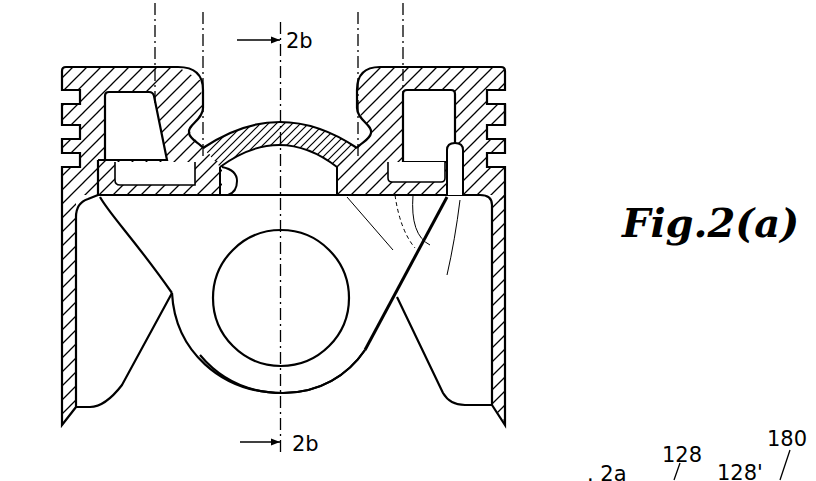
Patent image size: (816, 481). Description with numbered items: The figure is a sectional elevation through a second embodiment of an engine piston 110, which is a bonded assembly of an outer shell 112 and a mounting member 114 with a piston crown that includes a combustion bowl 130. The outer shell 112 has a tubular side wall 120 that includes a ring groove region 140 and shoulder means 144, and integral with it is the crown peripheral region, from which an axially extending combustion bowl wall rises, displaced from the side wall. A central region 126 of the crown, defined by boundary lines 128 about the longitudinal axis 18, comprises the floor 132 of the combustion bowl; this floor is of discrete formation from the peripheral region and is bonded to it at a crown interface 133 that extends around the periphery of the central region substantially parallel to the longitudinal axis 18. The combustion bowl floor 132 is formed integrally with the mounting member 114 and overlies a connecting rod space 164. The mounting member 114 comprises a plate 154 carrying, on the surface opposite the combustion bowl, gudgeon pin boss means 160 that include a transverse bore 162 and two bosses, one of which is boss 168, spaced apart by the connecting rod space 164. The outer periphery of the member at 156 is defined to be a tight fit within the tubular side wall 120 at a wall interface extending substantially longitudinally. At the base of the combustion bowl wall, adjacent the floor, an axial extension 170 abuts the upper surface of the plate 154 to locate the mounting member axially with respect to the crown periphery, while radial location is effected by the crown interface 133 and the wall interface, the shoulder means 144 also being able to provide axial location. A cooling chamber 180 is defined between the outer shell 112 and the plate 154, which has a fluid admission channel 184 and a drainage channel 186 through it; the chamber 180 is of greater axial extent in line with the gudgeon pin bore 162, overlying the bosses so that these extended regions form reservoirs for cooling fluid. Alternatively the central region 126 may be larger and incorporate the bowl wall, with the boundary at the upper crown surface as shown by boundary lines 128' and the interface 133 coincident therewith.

The longitudinal axis 18 is at (280, 273).
The piston 110 is at (540, 325).
The outer shell 112 is at (133, 387).
The mounting member 114 is at (228, 388).
The tubular side wall 120 is at (495, 300).
The central region 126 is at (322, 116).
The boundary lines 128 is at (325, 83).
The boundary lines 128' is at (295, 55).
The combustion bowl 130 is at (257, 99).
The combustion bowl floor 132 is at (250, 123).
The crown interface 133 is at (235, 195).
The ring groove region 140 is at (515, 160).
The shoulder means 144 is at (487, 187).
The plate 154 is at (390, 220).
The outer periphery of the mounting member 156 is at (477, 137).
The gudgeon pin boss means 160 is at (370, 350).
The transverse bore 162 is at (332, 317).
The connecting rod space 164 is at (303, 158).
The boss 168 is at (320, 375).
The axial extension 170 is at (195, 165).
The cooling chamber 180 is at (443, 108).
The fluid admission channel 184 is at (415, 230).
The drainage channel 186 is at (153, 233).